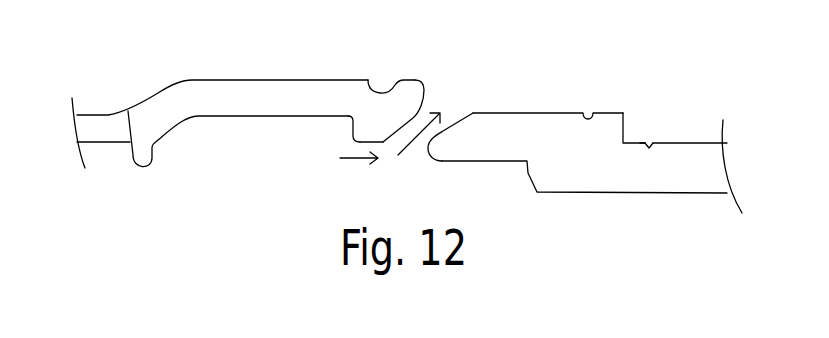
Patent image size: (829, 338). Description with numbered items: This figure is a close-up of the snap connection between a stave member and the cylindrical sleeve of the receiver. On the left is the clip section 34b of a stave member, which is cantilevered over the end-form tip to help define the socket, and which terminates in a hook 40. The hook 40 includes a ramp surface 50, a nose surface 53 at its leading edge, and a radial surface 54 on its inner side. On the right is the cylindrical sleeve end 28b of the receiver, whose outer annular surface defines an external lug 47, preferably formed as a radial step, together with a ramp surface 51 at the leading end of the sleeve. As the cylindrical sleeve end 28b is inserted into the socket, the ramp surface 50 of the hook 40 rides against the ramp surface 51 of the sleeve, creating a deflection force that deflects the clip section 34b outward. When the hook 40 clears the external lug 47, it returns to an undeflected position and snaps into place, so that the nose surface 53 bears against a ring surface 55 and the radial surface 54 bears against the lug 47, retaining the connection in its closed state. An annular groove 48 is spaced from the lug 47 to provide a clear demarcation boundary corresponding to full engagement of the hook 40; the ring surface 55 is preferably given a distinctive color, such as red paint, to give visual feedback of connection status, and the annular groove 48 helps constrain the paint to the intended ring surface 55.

The clip section 34b is at (208, 90).
The hook 40 is at (393, 112).
The ramp surface 50 is at (417, 114).
The radial surface 54 is at (356, 130).
The nose surface 53 is at (368, 143).
The ramp surface 51 is at (440, 130).
The cylindrical sleeve end 28b is at (528, 133).
The external lug 47 is at (629, 122).
The ring surface 55 is at (638, 140).
The annular groove 48 is at (649, 148).